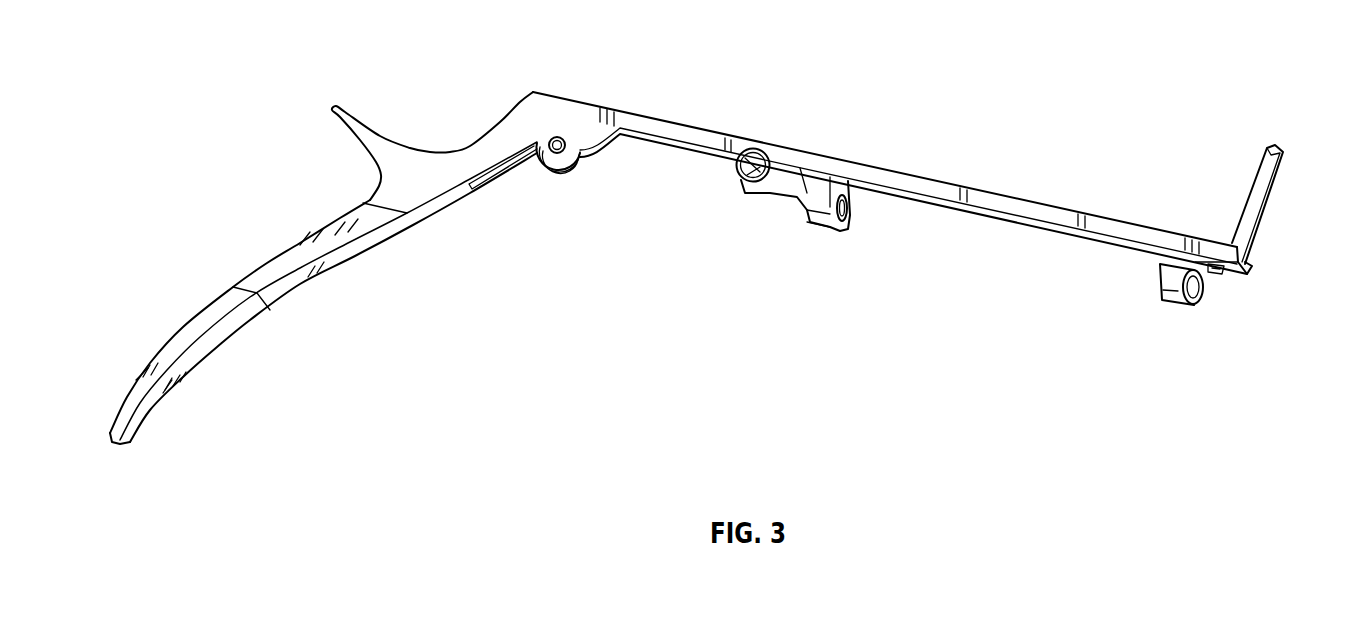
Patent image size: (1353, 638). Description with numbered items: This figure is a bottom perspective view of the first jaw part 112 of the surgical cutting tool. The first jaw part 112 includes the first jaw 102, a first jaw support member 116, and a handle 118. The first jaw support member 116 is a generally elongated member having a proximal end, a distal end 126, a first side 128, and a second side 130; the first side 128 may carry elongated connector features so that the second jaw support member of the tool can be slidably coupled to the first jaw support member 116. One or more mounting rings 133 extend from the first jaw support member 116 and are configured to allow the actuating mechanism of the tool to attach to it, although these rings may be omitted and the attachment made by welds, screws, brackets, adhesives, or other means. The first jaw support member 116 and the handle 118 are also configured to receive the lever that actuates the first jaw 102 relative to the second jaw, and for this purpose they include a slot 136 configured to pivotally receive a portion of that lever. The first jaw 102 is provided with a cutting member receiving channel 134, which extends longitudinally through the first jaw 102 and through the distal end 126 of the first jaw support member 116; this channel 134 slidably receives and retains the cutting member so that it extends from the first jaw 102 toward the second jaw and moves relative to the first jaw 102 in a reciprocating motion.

The first jaw 102 is at (1247, 192).
The first jaw part 112 is at (673, 111).
The first jaw support member 116 is at (915, 178).
The handle 118 is at (270, 258).
The distal end 126 is at (1248, 266).
The first side 128 is at (1027, 198).
The second side 130 is at (996, 220).
The mounting rings 133 is at (767, 152).
The cutting member receiving channel 134 is at (1219, 279).
The slot 136 is at (500, 171).